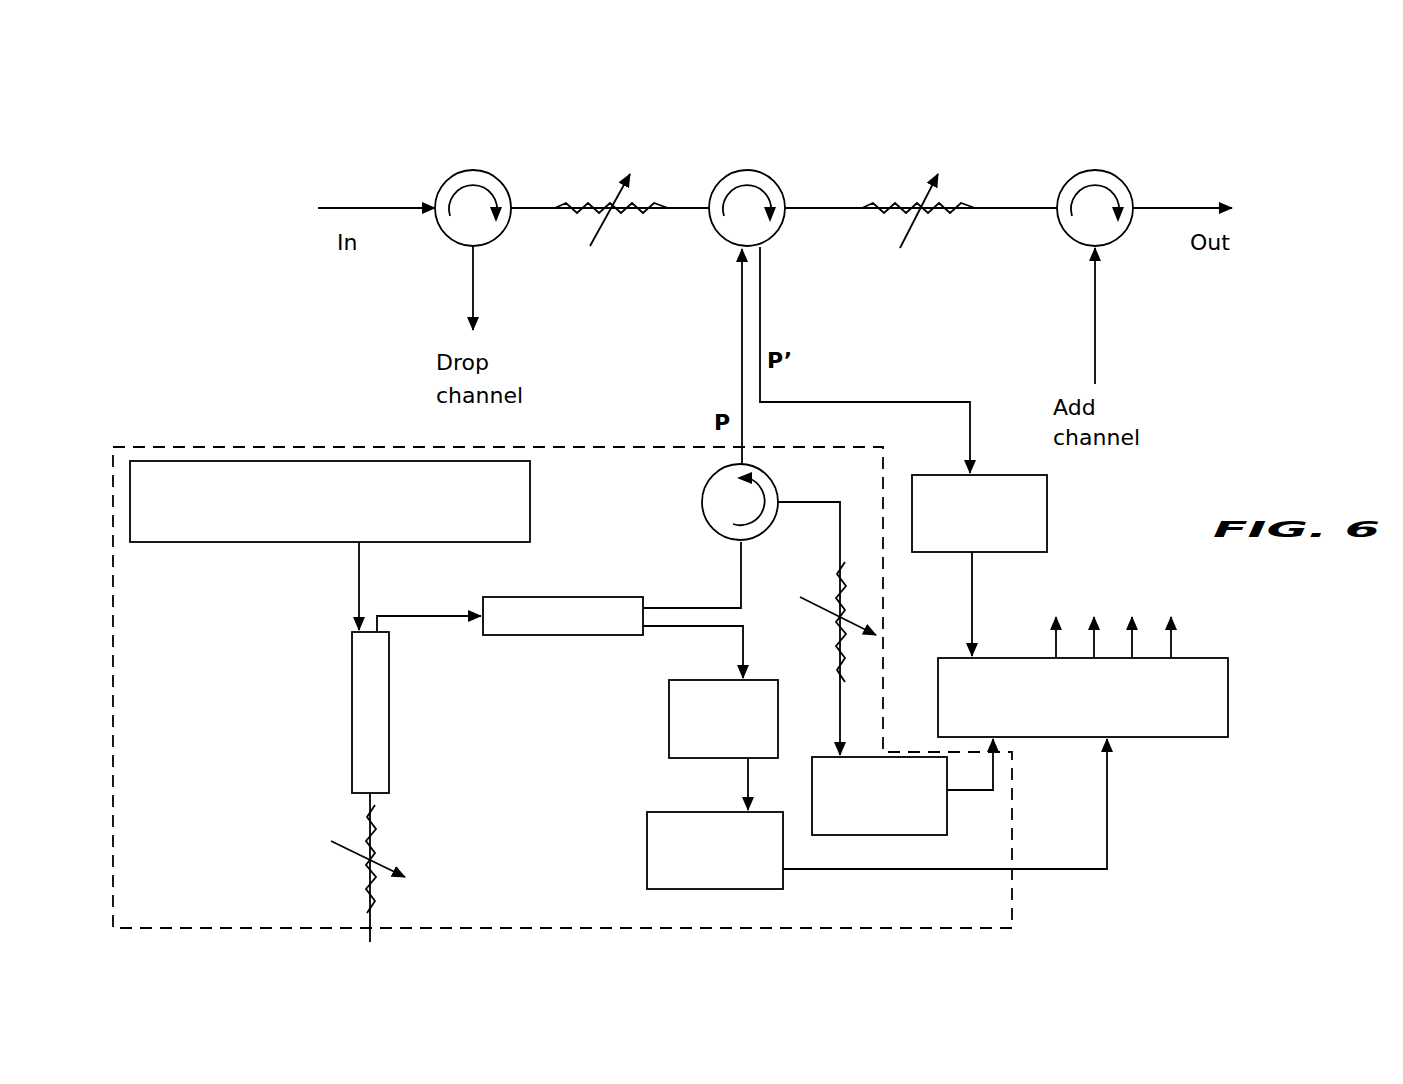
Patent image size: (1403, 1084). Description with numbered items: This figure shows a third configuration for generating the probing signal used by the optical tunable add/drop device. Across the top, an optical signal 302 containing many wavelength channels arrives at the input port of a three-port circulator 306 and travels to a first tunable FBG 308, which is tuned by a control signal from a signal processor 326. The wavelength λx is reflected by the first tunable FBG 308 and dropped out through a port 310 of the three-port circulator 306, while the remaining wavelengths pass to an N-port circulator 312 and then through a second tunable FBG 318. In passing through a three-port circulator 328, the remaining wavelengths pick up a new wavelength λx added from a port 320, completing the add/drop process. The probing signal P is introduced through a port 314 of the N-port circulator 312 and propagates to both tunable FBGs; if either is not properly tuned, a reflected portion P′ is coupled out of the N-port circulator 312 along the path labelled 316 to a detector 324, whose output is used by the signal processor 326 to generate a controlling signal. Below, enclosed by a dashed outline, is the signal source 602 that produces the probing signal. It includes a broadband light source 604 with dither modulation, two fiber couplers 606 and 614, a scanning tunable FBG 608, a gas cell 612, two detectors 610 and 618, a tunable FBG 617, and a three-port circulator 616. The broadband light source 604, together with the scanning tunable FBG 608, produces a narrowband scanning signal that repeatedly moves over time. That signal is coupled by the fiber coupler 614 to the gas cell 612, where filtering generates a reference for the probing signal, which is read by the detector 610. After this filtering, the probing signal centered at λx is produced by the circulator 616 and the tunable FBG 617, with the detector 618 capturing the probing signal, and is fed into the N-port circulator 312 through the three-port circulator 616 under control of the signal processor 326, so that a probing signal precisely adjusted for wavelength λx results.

The optical signal 302 is at (320, 197).
The three-port circulator 306 is at (447, 174).
The first tunable FBG 308 is at (593, 242).
The port 310 is at (470, 262).
The N-port circulator 312 is at (780, 174).
The port 314 is at (735, 283).
The reflected probe light path P' 316 is at (765, 265).
The second tunable FBG 318 is at (921, 244).
The port 320 is at (1092, 270).
The detector 324 is at (930, 478).
The signal processor 326 is at (955, 655).
The three-port circulator 328 is at (1111, 174).
The signal source 602 is at (562, 687).
The broadband light source 604 is at (258, 456).
The fiber coupler 606 is at (355, 740).
The scanning tunable FBG 608 is at (368, 868).
The detector 610 is at (660, 845).
The gas cell 612 is at (675, 738).
The fiber coupler 614 is at (542, 640).
The 3-port circulator 616 is at (780, 488).
The tunable FBG 617 is at (831, 622).
The detector 618 is at (940, 820).